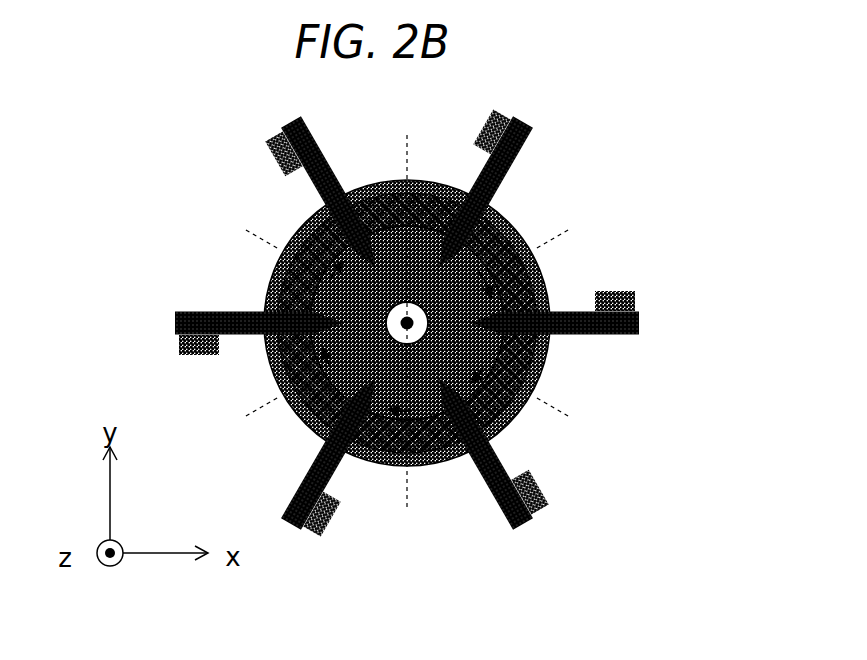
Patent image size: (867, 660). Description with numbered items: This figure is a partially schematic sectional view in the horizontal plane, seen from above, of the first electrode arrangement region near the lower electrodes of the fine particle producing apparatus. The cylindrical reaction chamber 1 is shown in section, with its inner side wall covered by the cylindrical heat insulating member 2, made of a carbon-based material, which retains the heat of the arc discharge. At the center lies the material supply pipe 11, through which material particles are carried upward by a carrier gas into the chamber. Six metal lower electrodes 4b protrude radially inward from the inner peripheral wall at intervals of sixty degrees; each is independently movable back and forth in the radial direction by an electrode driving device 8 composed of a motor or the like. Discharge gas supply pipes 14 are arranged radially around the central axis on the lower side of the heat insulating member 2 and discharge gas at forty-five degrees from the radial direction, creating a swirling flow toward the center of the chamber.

The reaction chamber 1 is at (517, 225).
The heat insulating member 2 is at (293, 295).
The discharge gas supply pipe 14 is at (424, 240).
The material supply pipe 11 is at (390, 333).
The lower electrode 4b is at (593, 328).
The electrode driving device 8 is at (538, 490).